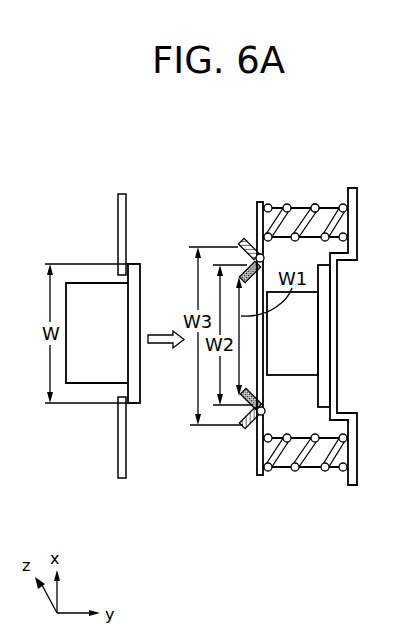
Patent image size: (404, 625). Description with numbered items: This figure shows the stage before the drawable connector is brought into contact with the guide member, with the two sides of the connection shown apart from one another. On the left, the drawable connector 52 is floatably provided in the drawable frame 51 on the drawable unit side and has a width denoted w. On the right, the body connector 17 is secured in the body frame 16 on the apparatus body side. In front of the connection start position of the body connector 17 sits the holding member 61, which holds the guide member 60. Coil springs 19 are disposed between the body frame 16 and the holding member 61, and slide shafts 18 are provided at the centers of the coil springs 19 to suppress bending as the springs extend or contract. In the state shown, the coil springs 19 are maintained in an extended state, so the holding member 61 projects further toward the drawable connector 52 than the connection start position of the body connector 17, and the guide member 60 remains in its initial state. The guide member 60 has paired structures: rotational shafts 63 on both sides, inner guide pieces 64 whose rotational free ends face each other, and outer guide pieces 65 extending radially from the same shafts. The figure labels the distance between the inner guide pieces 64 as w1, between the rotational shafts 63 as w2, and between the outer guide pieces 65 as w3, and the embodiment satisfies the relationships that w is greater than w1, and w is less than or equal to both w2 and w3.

The body frame 16 is at (357, 208).
The body connector 17 is at (310, 320).
The slide shafts 18 is at (294, 217).
The coil springs 19 is at (314, 204).
The drawable frame 51 is at (118, 210).
The drawable connector 52 is at (92, 376).
The guide member 60 is at (290, 320).
The holding member 61 is at (257, 228).
The rotational shafts 63 is at (265, 411).
The inner guide pieces 64 is at (247, 400).
The outer guide pieces 65 is at (248, 425).